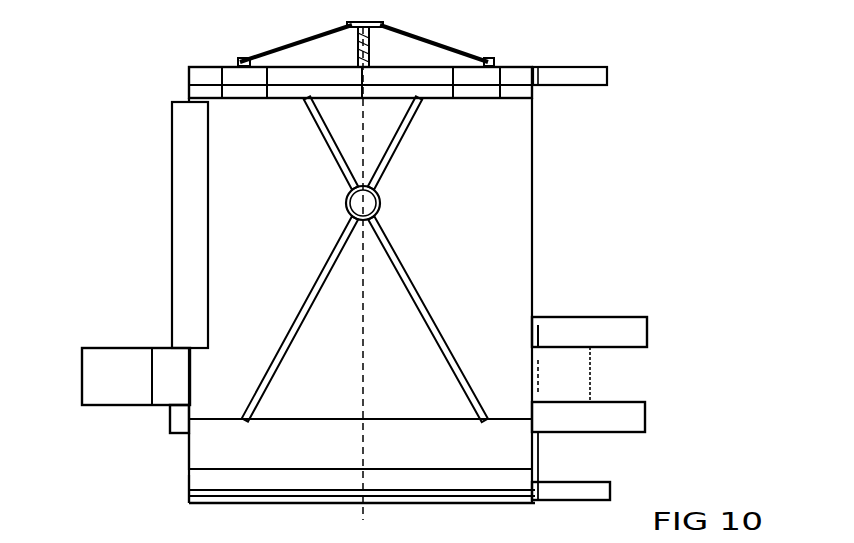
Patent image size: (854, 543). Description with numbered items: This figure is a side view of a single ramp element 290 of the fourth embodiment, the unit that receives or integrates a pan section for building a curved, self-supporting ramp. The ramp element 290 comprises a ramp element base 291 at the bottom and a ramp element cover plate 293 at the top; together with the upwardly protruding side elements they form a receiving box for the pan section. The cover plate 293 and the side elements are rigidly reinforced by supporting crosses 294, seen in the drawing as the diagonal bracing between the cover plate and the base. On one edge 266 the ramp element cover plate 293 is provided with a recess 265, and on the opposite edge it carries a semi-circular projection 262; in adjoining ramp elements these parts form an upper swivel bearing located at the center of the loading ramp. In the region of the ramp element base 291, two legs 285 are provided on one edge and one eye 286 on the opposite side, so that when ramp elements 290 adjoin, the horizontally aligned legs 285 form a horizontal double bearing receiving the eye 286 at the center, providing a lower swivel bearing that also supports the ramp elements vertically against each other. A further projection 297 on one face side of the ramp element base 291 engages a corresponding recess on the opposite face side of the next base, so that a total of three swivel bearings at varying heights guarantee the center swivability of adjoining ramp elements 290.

The ramp element 290 is at (58, 181).
The supporting cross 294 is at (418, 52).
The semi-circular projection 262 is at (587, 78).
The legs 285 is at (613, 330).
The further projection 297 is at (585, 487).
The eye 286 is at (120, 375).
The ramp element cover plate 293 is at (109, 474).
The ramp element base 291 is at (487, 503).
The edge 266 is at (140, 509).
The recess 265 is at (190, 488).